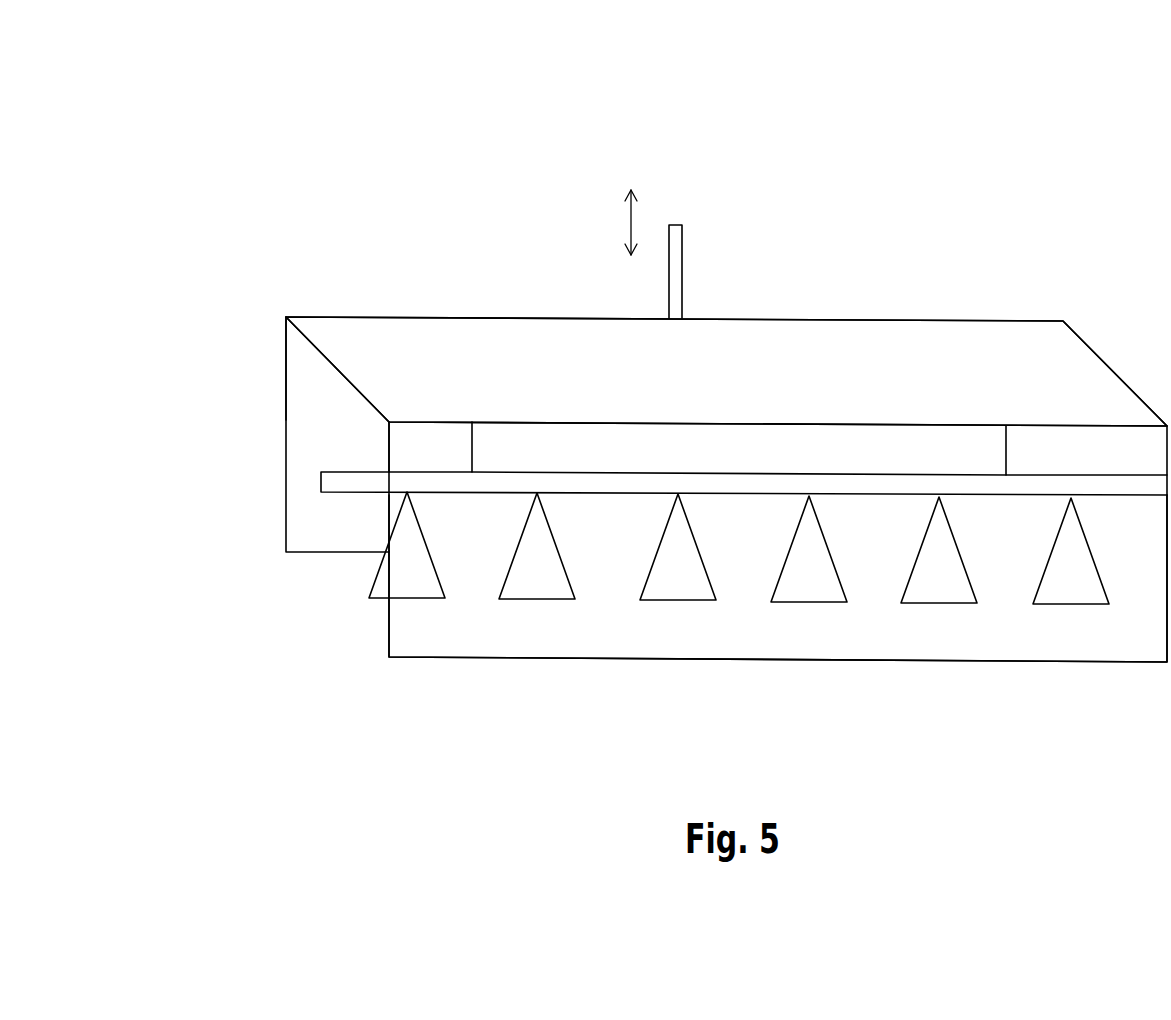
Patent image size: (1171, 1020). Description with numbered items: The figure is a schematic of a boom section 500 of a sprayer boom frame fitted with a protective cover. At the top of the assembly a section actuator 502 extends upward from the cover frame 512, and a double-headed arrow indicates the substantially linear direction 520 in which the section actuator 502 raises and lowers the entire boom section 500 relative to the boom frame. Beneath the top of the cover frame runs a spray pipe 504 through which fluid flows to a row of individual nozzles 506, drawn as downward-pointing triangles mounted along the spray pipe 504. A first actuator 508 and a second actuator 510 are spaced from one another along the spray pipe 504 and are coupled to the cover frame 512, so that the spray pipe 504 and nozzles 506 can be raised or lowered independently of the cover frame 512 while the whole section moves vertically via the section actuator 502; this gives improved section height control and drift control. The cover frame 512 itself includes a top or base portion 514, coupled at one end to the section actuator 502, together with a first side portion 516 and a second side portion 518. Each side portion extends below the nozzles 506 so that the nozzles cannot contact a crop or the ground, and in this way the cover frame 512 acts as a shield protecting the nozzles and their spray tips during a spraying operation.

The boom section 500 is at (726, 358).
The section actuator 502 is at (682, 257).
The spray pipe 504 is at (333, 480).
The nozzles 506 is at (420, 598).
The first actuator 508 is at (473, 450).
The second actuator 510 is at (1006, 452).
The cover frame 512 is at (303, 378).
The base portion 514 is at (421, 352).
The first side portion 516 is at (745, 635).
The second side portion 518 is at (299, 352).
The substantially linear direction 520 is at (628, 225).